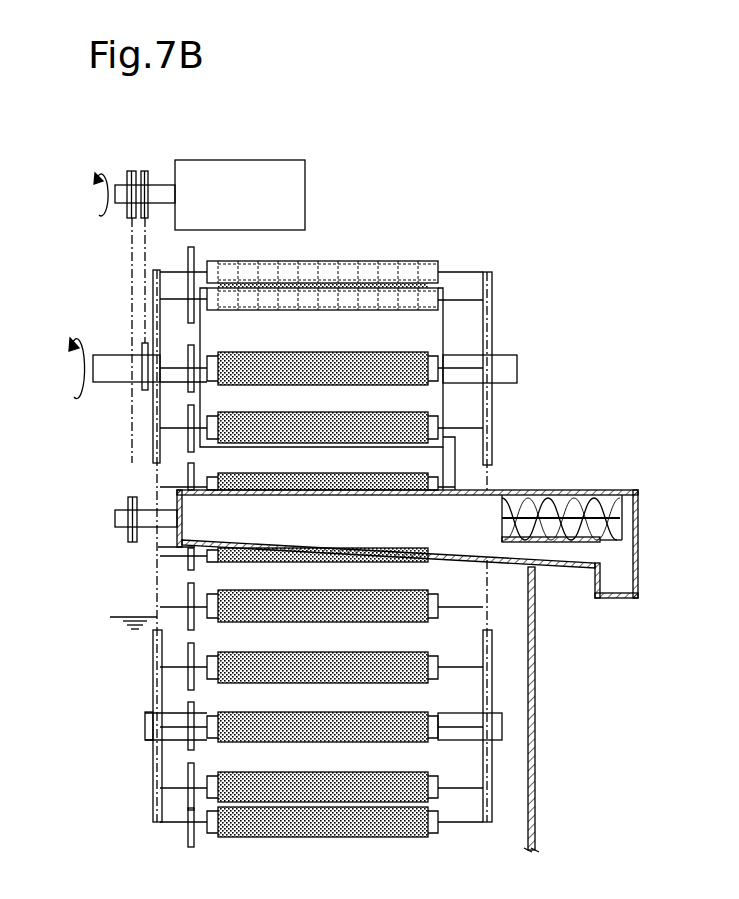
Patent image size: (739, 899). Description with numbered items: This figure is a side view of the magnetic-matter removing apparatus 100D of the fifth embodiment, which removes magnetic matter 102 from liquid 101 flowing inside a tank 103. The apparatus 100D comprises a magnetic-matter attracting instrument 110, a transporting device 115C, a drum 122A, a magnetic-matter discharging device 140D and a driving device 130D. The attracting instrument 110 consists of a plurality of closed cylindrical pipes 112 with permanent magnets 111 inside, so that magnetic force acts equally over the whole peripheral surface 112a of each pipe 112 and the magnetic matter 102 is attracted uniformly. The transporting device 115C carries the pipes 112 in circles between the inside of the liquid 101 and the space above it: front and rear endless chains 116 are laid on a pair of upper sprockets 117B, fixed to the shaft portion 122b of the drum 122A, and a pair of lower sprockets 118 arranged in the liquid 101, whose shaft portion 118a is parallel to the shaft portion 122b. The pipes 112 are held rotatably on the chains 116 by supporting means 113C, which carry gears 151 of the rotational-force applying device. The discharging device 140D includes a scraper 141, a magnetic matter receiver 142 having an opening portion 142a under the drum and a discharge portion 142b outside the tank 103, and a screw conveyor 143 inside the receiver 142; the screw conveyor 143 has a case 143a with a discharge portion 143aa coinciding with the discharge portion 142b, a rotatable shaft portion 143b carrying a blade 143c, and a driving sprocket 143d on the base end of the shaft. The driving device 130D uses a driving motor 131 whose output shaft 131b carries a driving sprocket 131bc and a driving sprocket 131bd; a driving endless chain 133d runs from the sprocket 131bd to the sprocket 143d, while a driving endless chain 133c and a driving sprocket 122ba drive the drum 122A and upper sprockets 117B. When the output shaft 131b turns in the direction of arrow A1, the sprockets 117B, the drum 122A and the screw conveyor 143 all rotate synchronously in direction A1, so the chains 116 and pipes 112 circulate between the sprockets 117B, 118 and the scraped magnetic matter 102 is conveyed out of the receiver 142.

The magnetic-matter removing apparatus 100D is at (717, 96).
The magnetic-matter attracting instrument 110 is at (460, 160).
The driving device 130D is at (110, 155).
The driving motor 131 is at (242, 152).
The output shaft 131b is at (160, 185).
The driving sprocket 131bc is at (132, 170).
The driving sprocket 131bd is at (127, 210).
The driving endless chain 133d is at (133, 258).
The driving endless chain 133c is at (145, 282).
The direction of rotation A1 is at (92, 193).
The upper sprockets 117B is at (153, 318).
The endless chains 116 is at (157, 597).
The lower sprockets 118 is at (153, 770).
The shaft portion 118a is at (145, 723).
The pipes 112 is at (437, 255).
The peripheral surface 112a is at (369, 260).
The permanent magnets 111 is at (412, 270).
The transporting device 115C is at (363, 194).
The drum 122A is at (458, 403).
The shaft portion 122b is at (107, 383).
The driving sprocket 122ba is at (143, 390).
The magnetic matter 102 is at (420, 480).
The supporting means 113C is at (182, 823).
The scraper 141 is at (187, 458).
The gears 151 is at (190, 547).
The driving sprocket 143d is at (128, 533).
The magnetic-matter discharging device 140D is at (717, 372).
The magnetic matter receiver 142 is at (448, 587).
The opening portion 142a is at (402, 531).
The discharge portion 142b is at (617, 597).
The screw conveyor 143 is at (611, 540).
The case 143a is at (590, 525).
The discharge portion 143aa is at (612, 543).
The shaft portion 143b is at (587, 517).
The blade 143c is at (560, 517).
The tank 103 is at (535, 717).
The liquid 101 is at (507, 633).